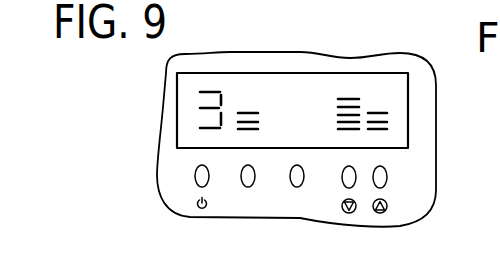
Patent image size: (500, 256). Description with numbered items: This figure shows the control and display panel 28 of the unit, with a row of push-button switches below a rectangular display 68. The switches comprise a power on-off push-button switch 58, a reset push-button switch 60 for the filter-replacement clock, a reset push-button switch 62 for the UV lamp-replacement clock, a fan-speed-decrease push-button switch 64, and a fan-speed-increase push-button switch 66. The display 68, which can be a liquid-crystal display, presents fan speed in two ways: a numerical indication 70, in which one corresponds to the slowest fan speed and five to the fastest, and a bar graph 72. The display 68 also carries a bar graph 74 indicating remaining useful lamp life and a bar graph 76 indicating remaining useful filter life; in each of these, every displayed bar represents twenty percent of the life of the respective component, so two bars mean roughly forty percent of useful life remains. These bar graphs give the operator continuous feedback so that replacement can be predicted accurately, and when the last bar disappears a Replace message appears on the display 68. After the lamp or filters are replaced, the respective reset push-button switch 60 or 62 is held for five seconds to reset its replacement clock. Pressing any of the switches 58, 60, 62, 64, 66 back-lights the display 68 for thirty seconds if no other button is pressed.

The control and display panel 28 is at (425, 92).
The power on-off push-button switch 58 is at (195, 177).
The reset push-button switch for the filter-replacement clock 60 is at (243, 179).
The reset push-button switch for the UV lamp-replacement clock 62 is at (293, 181).
The fan-speed-decrease push-button switch 64 is at (342, 178).
The fan-speed-increase push-button switch 66 is at (388, 178).
The display 68 is at (177, 107).
The numerical indication 70 is at (212, 92).
The bar graph 72 is at (247, 112).
The bar graph indicating remaining useful lamp life 74 is at (350, 98).
The bar graph indicating remaining useful filter life 76 is at (378, 112).